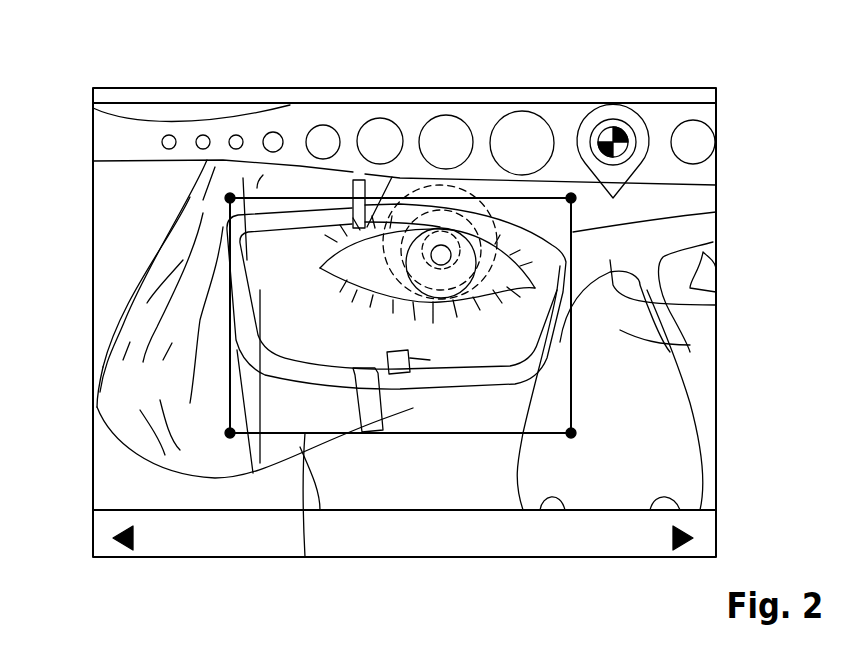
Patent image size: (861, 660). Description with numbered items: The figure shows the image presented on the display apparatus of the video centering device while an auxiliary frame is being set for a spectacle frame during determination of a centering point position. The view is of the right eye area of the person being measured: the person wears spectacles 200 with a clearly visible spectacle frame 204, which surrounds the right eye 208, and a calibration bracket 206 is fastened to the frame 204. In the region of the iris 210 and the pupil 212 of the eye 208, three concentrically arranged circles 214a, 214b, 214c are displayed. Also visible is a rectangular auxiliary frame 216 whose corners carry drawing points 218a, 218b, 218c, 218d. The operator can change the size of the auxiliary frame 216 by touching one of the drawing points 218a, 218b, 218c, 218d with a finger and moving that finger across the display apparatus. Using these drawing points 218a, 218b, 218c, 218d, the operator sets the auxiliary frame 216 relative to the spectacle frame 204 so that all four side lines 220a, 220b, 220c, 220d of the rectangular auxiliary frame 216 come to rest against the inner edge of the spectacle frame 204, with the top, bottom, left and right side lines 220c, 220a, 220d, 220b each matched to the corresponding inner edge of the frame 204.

The spectacles 200 is at (716, 308).
The spectacle frame 204 is at (700, 228).
The calibration bracket 206 is at (645, 127).
The right eye 208 is at (265, 298).
The iris 210 is at (330, 263).
The pupil 212 is at (440, 265).
The concentric circle 214a is at (408, 193).
The concentric circle 214b is at (485, 193).
The concentric circle 214c is at (440, 250).
The auxiliary frame 216 is at (305, 433).
The drawing point 218a is at (228, 433).
The drawing point 218b is at (571, 433).
The drawing point 218c is at (571, 197).
The drawing point 218d is at (230, 197).
The side line 220a is at (478, 433).
The side line 220b is at (571, 397).
The side line 220c is at (297, 197).
The side line 220d is at (230, 398).